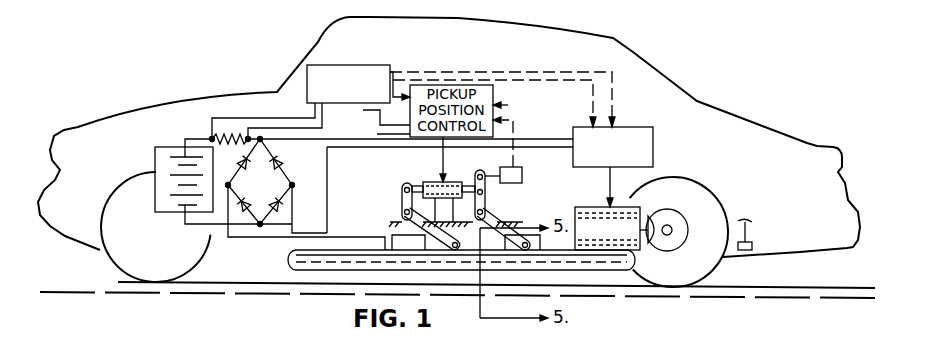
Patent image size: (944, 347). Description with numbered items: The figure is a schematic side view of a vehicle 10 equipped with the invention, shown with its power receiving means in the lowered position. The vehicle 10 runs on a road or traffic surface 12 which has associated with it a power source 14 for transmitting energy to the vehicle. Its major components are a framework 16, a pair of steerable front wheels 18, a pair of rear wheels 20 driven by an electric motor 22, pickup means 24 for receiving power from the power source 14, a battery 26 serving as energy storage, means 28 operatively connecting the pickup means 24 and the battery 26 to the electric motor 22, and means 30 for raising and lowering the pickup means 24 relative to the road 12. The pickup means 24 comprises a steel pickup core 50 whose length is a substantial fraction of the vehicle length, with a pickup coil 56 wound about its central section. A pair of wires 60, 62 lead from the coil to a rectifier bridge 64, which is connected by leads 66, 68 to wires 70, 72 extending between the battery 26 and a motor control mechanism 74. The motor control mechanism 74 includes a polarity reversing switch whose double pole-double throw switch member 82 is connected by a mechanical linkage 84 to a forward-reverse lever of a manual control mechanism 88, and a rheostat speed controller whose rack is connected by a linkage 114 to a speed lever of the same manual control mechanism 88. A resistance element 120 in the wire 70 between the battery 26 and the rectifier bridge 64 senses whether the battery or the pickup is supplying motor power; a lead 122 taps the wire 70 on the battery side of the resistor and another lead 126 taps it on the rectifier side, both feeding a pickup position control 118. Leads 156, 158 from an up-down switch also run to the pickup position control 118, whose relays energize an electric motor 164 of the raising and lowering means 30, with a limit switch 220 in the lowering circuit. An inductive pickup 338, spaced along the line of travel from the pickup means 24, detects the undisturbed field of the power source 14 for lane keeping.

The vehicle 10 is at (718, 67).
The road or traffic surface 12 is at (822, 287).
The power source 14 is at (261, 292).
The framework 16 is at (505, 218).
The steerable front wheels 18 is at (114, 175).
The rear wheels 20 is at (718, 186).
The electric motor 22 is at (585, 207).
The pickup means 24 is at (275, 268).
The battery 26 is at (167, 145).
The connecting means 28 is at (342, 150).
The raising and lowering means 30 is at (398, 202).
The pickup core 50 is at (635, 257).
The pickup coil 56 is at (408, 238).
The wire 60 is at (339, 230).
The wire 62 is at (245, 238).
The rectifier bridge 64 is at (286, 164).
The lead 66 is at (267, 150).
The lead 68 is at (263, 222).
The wire 70 is at (299, 148).
The wire 72 is at (388, 153).
The motor control mechanism 74 is at (655, 140).
The double pole-double throw switch member 82 is at (660, 214).
The mechanical linkage 84 is at (532, 72).
The manual control mechanism 88 is at (343, 65).
The linkage 114 is at (593, 97).
The pickup position control 118 is at (508, 105).
The resistance element 120 is at (237, 150).
The lead 122 is at (258, 115).
The lead 126 is at (298, 106).
The lead 156 is at (377, 134).
The lead 158 is at (371, 114).
The electric motor 164 is at (433, 182).
The limit switch 220 is at (518, 175).
The inductive pickup 338 is at (753, 245).